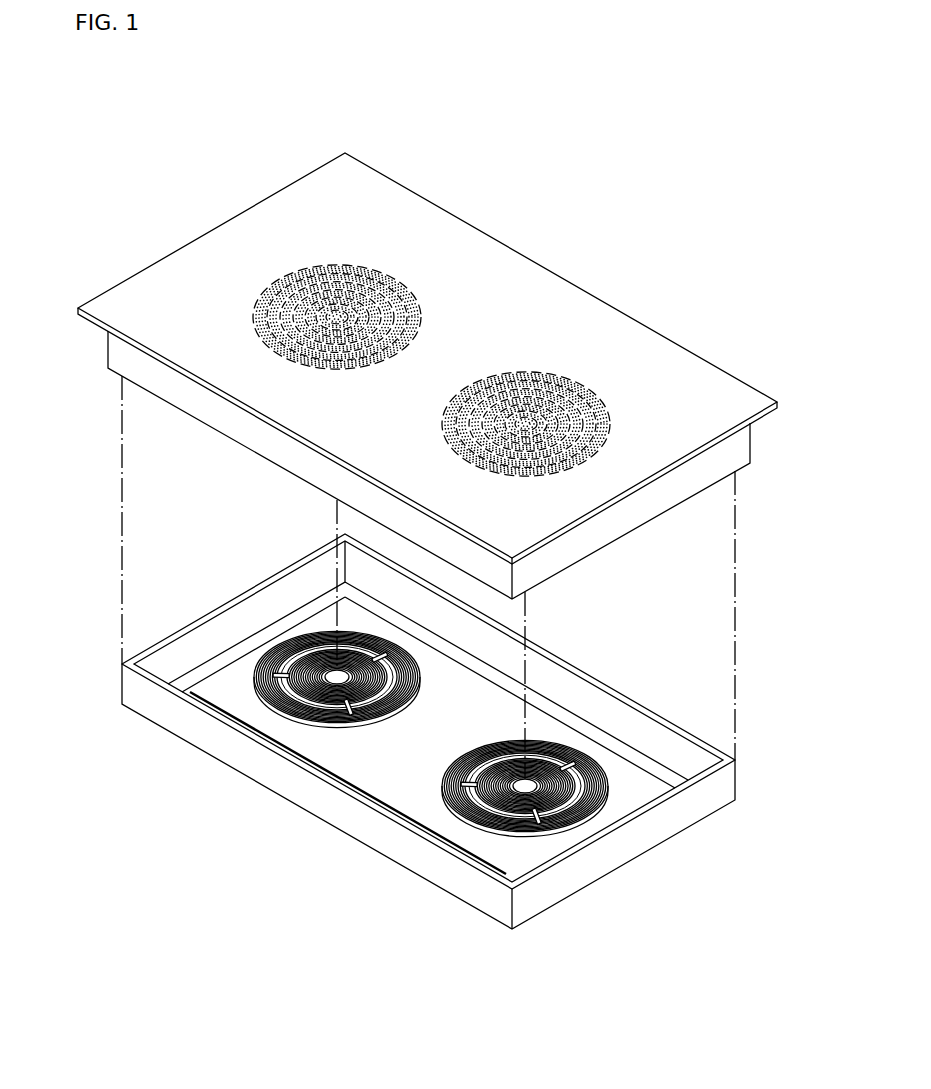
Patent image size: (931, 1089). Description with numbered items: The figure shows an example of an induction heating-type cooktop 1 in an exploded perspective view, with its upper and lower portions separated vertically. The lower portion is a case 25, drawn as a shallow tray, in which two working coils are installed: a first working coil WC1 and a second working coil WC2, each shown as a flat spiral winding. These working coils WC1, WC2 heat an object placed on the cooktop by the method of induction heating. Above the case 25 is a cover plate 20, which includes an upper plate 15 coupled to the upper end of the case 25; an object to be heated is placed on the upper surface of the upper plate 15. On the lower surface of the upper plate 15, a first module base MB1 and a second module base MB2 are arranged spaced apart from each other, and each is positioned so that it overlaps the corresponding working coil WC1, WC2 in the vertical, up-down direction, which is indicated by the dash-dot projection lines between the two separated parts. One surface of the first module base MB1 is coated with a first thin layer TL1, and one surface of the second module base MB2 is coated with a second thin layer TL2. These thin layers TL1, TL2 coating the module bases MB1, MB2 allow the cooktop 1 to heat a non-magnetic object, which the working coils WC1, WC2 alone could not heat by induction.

The induction heating-type cooktop 1 is at (179, 88).
The upper plate 15 is at (672, 375).
The cover plate 20 is at (738, 363).
The case 25 is at (633, 842).
The first module base MB1 is at (370, 263).
The second module base MB2 is at (563, 375).
The first thin layer TL1 is at (288, 293).
The second thin layer TL2 is at (527, 388).
The first working coil WC1 is at (295, 717).
The second working coil WC2 is at (475, 823).